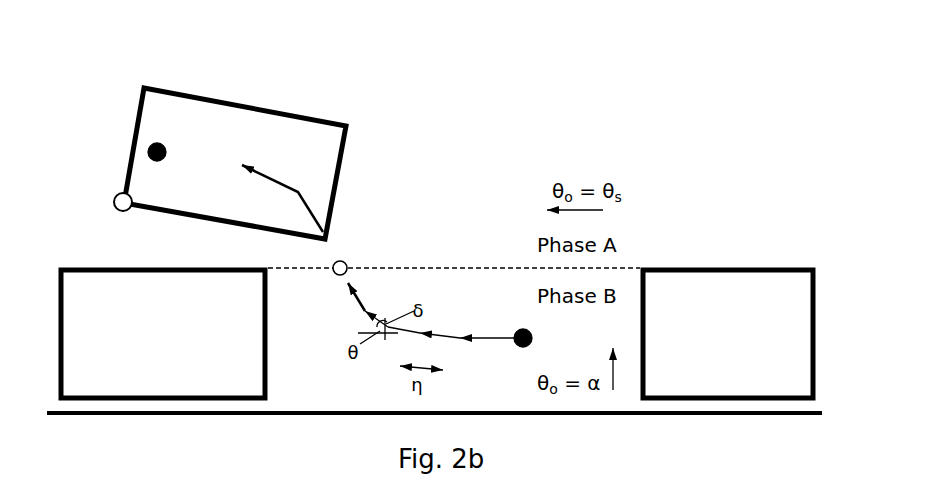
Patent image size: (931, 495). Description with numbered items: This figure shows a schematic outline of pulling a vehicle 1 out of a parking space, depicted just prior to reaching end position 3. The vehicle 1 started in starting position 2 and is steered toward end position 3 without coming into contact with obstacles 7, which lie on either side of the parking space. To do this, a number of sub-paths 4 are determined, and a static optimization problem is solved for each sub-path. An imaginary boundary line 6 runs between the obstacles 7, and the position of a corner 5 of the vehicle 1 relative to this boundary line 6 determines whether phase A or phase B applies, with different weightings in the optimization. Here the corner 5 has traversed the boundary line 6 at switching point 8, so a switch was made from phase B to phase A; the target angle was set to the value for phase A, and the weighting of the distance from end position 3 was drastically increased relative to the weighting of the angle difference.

The vehicle 1 is at (186, 134).
The starting position 2 is at (516, 331).
The end position 3 is at (145, 138).
The sub-paths 4 is at (390, 321).
The corner 5 is at (113, 190).
The boundary line 6 is at (474, 266).
The obstacles 7 is at (140, 341).
The switching point 8 is at (336, 276).